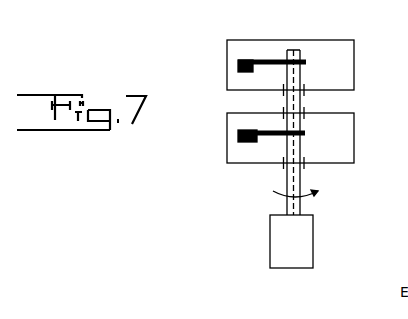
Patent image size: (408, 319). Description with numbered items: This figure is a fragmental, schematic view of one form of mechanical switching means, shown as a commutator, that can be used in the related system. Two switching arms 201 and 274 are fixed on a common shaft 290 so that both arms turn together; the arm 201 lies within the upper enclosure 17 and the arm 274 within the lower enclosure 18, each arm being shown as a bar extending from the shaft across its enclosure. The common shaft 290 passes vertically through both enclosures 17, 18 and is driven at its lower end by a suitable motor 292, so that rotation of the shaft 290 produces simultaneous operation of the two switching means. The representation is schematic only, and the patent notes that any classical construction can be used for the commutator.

The upper housing block 17 is at (354, 72).
The lower housing block 18 is at (354, 147).
The arm 201 is at (272, 59).
The arm 274 is at (268, 130).
The common shaft 290 is at (290, 210).
The motor 292 is at (285, 236).